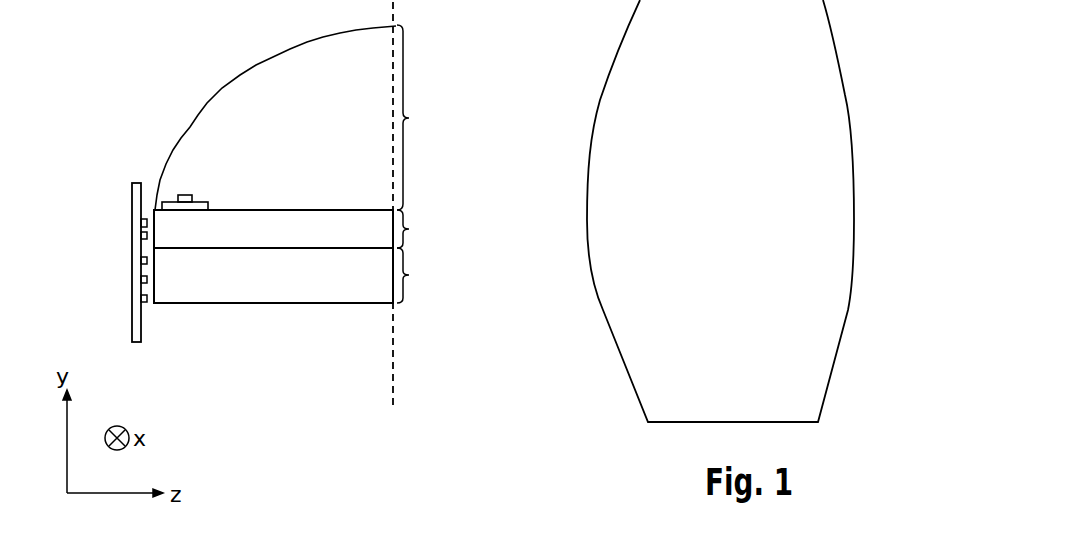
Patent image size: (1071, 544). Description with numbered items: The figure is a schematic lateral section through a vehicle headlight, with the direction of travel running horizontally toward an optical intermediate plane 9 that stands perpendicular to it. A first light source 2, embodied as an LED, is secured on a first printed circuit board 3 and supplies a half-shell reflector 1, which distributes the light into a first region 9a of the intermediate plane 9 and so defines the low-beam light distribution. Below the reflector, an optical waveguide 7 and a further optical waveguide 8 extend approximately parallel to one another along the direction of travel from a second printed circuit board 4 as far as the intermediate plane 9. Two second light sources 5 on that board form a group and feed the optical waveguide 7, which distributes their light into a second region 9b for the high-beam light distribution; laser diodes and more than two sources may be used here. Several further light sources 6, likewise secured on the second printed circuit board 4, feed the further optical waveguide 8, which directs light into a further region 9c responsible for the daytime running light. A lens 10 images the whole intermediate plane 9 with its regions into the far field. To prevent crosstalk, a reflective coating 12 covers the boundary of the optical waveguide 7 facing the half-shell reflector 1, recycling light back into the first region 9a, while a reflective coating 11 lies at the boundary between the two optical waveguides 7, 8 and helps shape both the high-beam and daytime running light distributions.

The half-shell reflector 1 is at (258, 70).
The first light source 2 is at (183, 195).
The first printed circuit board 3 is at (170, 202).
The second printed circuit board 4 is at (136, 183).
The second light sources 5 is at (132, 235).
The further light sources 6 is at (132, 298).
The optical waveguide 7 is at (313, 223).
The further optical waveguide 8 is at (318, 280).
The optical intermediate plane 9 is at (393, 360).
The first region 9a is at (419, 117).
The second region 9b is at (419, 229).
The further region 9c is at (418, 275).
The lens 10 is at (808, 337).
The reflective coating 11 is at (225, 250).
The reflective coating 12 is at (257, 210).